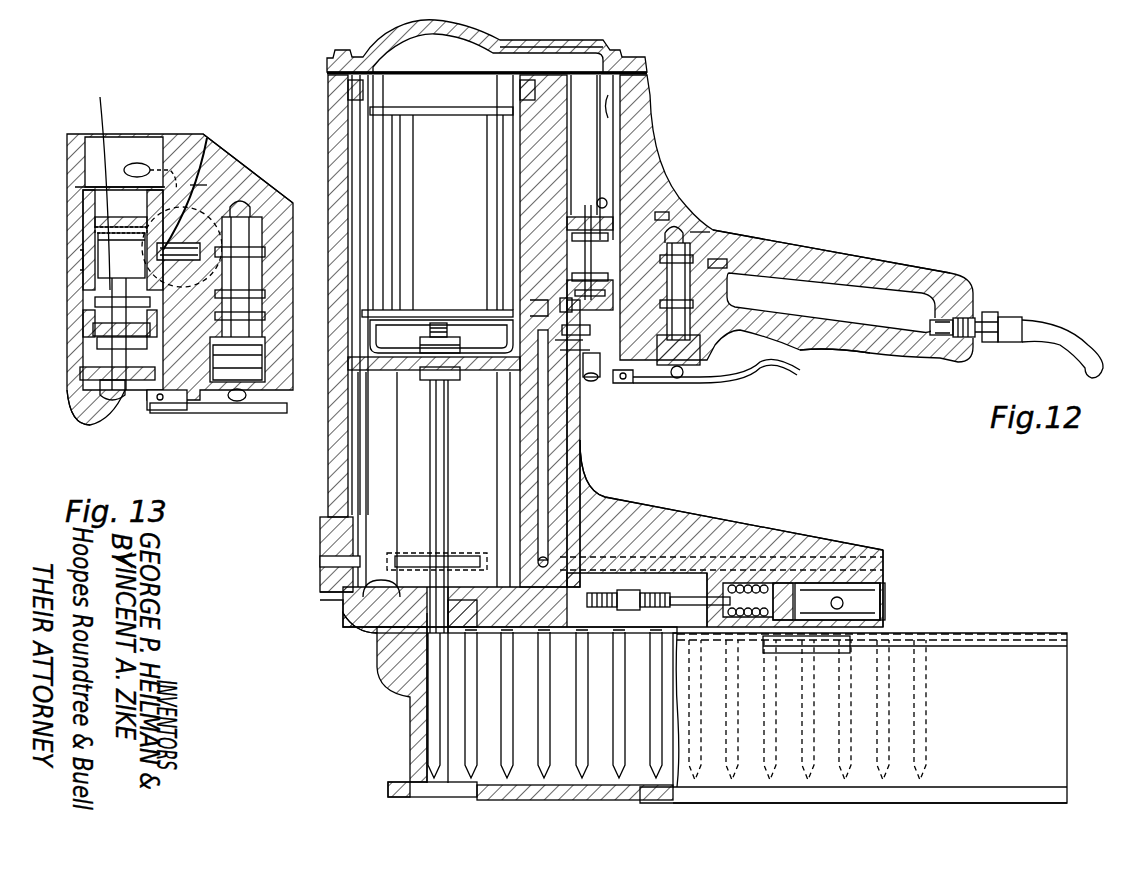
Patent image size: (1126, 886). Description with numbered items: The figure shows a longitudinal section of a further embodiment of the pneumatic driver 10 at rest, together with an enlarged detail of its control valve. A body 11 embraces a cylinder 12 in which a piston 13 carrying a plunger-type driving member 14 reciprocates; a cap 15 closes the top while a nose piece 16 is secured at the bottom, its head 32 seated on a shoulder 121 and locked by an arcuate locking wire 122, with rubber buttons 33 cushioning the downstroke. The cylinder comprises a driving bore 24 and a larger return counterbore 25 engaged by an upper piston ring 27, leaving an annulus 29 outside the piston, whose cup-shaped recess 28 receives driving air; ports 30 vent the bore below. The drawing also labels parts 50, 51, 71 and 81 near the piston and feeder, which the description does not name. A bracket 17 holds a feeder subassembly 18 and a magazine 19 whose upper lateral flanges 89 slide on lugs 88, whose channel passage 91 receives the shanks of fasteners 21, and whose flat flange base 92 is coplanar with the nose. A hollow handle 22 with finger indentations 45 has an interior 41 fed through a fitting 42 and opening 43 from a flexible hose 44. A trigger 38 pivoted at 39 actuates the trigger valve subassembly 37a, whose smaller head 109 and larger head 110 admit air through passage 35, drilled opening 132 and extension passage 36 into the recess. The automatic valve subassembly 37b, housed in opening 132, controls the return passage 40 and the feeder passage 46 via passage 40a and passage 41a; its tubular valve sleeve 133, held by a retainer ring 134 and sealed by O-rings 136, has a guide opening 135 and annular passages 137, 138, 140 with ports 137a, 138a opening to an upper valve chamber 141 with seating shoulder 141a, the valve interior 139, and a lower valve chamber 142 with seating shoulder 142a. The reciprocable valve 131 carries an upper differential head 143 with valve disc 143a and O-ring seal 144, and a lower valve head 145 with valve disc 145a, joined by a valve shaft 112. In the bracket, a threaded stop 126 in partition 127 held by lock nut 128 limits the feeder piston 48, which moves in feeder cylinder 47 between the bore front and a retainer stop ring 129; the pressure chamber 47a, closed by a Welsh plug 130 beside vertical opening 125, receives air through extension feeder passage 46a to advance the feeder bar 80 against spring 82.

In FIG. 12, the pneumatic driver 10 is at (539, 287).
In FIG. 12, the body 11 is at (617, 100).
In FIG. 12, the cylinder 12 is at (346, 483).
In FIG. 12, the piston 13 is at (405, 370).
In FIG. 12, the driving member 14 is at (437, 448).
In FIG. 12, the cap 15 is at (395, 42).
In FIG. 12, the nose piece 16 is at (382, 670).
In FIG. 12, the bracket 17 is at (885, 560).
In FIG. 12, the feeder subassembly 18 is at (717, 642).
In FIG. 12, the magazine 19 is at (1060, 680).
In FIG. 12, the fasteners 21 is at (620, 752).
In FIG. 12, the hollow handle 22 is at (900, 272).
In FIG. 12, the driving bore 24 is at (352, 512).
In FIG. 12, the return counterbore 25 is at (352, 140).
In FIG. 12, the upper piston ring 27 is at (350, 90).
In FIG. 12, the cup-shaped recess 28 is at (434, 331).
In FIG. 12, the annulus 29 is at (350, 175).
In FIG. 12, the ports 30 is at (410, 560).
In FIG. 12, the flanged head 32 is at (360, 628).
In FIG. 12, the rubber buttons 33 is at (362, 588).
In FIG. 12, the passage 35 is at (648, 198).
In FIG. 13, the passage 35 is at (140, 168).
In FIG. 12, the extension passage 36 is at (565, 58).
In FIG. 12, the trigger valve subassembly 37a is at (700, 232).
In FIG. 12, the automatic valve subassembly 37b is at (590, 212).
In FIG. 12, the trigger 38 is at (775, 382).
In FIG. 13, the trigger 38 is at (262, 415).
In FIG. 12, the pivot 39 is at (624, 380).
In FIG. 12, the return passage 40 is at (540, 302).
In FIG. 13, the return passage 40 is at (78, 318).
In FIG. 12, the passage 40a is at (668, 216).
In FIG. 13, the passage 40a is at (205, 185).
In FIG. 12, the interior of handle 41 is at (831, 302).
In FIG. 12, the passage 41a is at (714, 270).
In FIG. 12, the fitting 42 is at (997, 343).
In FIG. 12, the opening 43 is at (942, 330).
In FIG. 12, the flexible hose 44 is at (1067, 352).
In FIG. 12, the finger indentations 45 is at (868, 354).
In FIG. 12, the feeder passage 46 is at (547, 473).
In FIG. 12, the extension feeder passage 46a is at (845, 603).
In FIG. 12, the feeder cylinder 47 is at (800, 585).
In FIG. 12, the pressure chamber 47a is at (860, 612).
In FIG. 12, the feeder piston 48 is at (773, 590).
In FIG. 12, the nut 50 is at (430, 330).
In FIG. 12, the washer 51 is at (420, 345).
In FIG. 12, the feed rod 71 is at (700, 589).
In FIG. 12, the feeder bar 80 is at (570, 635).
In FIG. 12, the feed piston 81 is at (782, 585).
In FIG. 12, the spring 82 is at (752, 622).
In FIG. 12, the lugs 88 is at (795, 655).
In FIG. 12, the upper lateral flanges 89 is at (1005, 640).
In FIG. 12, the channel passage 91 is at (686, 782).
In FIG. 12, the flat flange base 92 is at (1010, 792).
In FIG. 13, the head 109 is at (289, 205).
In FIG. 13, the head 110 is at (273, 368).
In FIG. 12, the valve shaft 112 is at (530, 312).
In FIG. 12, the shoulder 121 is at (360, 597).
In FIG. 12, the arcuate locking wire 122 is at (358, 614).
In FIG. 12, the vertical opening 125 is at (703, 565).
In FIG. 12, the threaded stop 126 is at (660, 583).
In FIG. 12, the partition 127 is at (645, 590).
In FIG. 12, the lock nut 128 is at (612, 590).
In FIG. 12, the retainer stop ring 129 is at (835, 578).
In FIG. 12, the Welsh plug 130 is at (882, 592).
In FIG. 13, the reciprocable valve 131 is at (110, 260).
In FIG. 12, the drilled opening 132 is at (612, 115).
In FIG. 13, the drilled opening 132 is at (133, 147).
In FIG. 13, the tubular valve sleeve 133 is at (83, 210).
In FIG. 13, the retainer ring 134 is at (90, 140).
In FIG. 13, the guide opening 135 is at (97, 430).
In FIG. 13, the O-rings 136 is at (83, 232).
In FIG. 13, the annular passage 137 is at (80, 258).
In FIG. 13, the ports 137a is at (210, 140).
In FIG. 13, the annular passage 138 is at (143, 305).
In FIG. 13, the ports 138a is at (160, 405).
In FIG. 13, the valve interior 139 is at (108, 303).
In FIG. 13, the annular passage 140 is at (80, 362).
In FIG. 13, the upper valve chamber 141 is at (100, 181).
In FIG. 12, the valve seating shoulder 141a is at (560, 302).
In FIG. 13, the lower valve chamber 142 is at (80, 424).
In FIG. 12, the valve seating shoulder 142a is at (577, 331).
In FIG. 12, the upper differential head 143 is at (575, 280).
In FIG. 12, the valve disc 143a is at (572, 292).
In FIG. 12, the O-ring seal 144 is at (575, 265).
In FIG. 12, the lower valve head 145 is at (590, 352).
In FIG. 12, the valve disc 145a is at (583, 345).